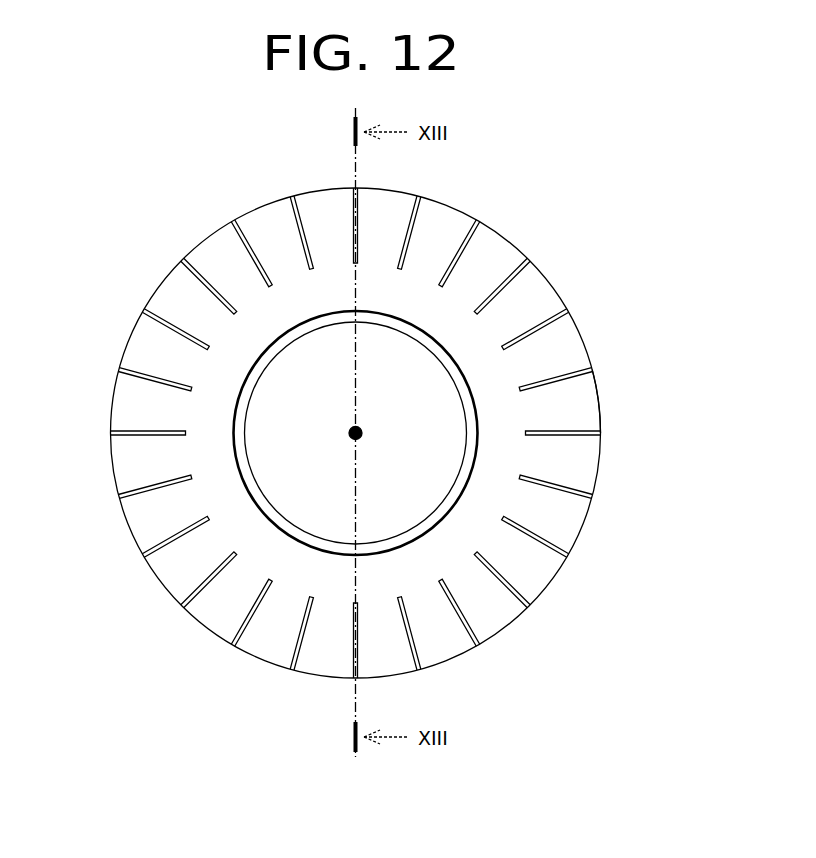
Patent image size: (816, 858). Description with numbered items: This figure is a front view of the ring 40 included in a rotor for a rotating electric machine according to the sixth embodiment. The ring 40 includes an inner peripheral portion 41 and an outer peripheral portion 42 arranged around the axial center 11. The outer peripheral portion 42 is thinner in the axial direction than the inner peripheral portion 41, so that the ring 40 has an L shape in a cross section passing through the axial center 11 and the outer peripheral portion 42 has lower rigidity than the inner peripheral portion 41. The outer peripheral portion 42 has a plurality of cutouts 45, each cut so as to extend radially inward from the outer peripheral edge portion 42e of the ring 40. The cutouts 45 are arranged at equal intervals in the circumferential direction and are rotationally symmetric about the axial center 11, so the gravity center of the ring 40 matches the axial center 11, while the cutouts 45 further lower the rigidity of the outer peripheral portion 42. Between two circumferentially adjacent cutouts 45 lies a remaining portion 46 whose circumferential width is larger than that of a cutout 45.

The ring 40 is at (134, 137).
The axial center 11 is at (352, 433).
The inner peripheral portion 41 is at (438, 350).
The outer peripheral portion 42 is at (548, 360).
The outer peripheral edge portion 42e is at (597, 470).
The cutout 45 is at (590, 371).
The remaining portion 46 is at (572, 403).